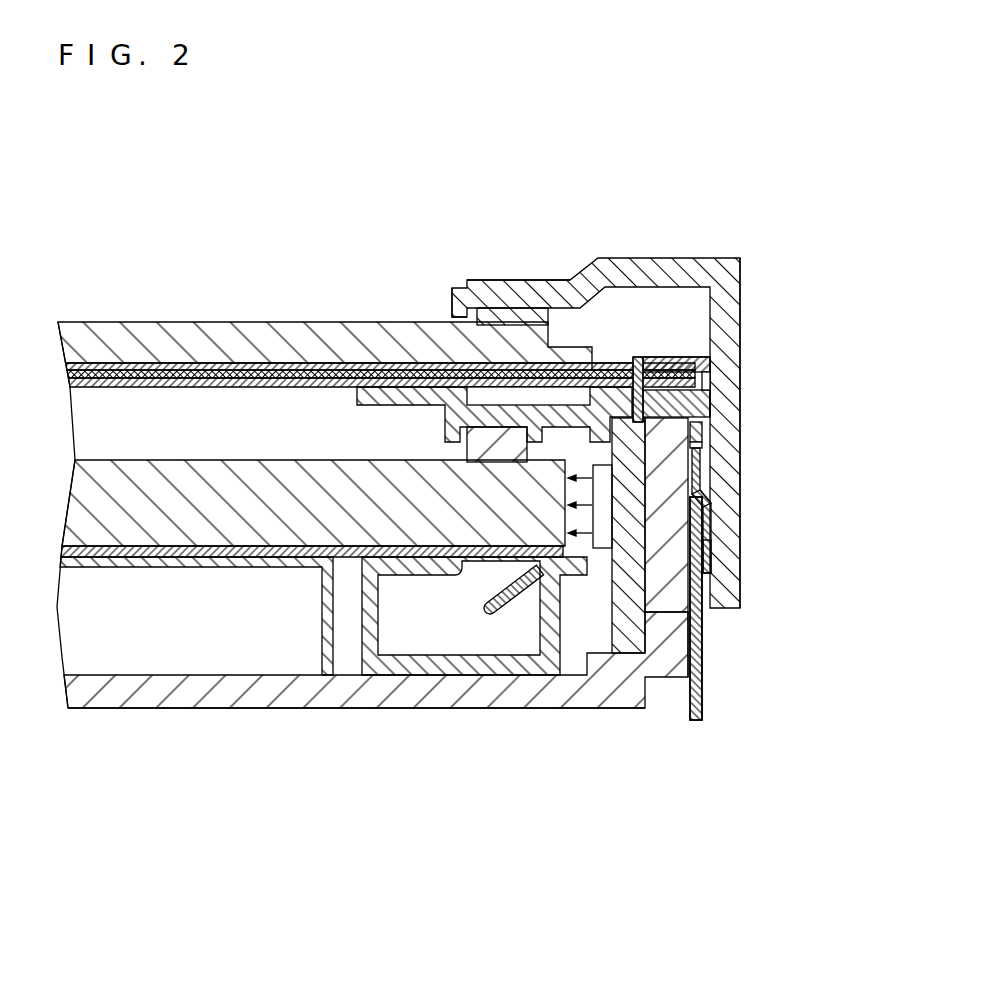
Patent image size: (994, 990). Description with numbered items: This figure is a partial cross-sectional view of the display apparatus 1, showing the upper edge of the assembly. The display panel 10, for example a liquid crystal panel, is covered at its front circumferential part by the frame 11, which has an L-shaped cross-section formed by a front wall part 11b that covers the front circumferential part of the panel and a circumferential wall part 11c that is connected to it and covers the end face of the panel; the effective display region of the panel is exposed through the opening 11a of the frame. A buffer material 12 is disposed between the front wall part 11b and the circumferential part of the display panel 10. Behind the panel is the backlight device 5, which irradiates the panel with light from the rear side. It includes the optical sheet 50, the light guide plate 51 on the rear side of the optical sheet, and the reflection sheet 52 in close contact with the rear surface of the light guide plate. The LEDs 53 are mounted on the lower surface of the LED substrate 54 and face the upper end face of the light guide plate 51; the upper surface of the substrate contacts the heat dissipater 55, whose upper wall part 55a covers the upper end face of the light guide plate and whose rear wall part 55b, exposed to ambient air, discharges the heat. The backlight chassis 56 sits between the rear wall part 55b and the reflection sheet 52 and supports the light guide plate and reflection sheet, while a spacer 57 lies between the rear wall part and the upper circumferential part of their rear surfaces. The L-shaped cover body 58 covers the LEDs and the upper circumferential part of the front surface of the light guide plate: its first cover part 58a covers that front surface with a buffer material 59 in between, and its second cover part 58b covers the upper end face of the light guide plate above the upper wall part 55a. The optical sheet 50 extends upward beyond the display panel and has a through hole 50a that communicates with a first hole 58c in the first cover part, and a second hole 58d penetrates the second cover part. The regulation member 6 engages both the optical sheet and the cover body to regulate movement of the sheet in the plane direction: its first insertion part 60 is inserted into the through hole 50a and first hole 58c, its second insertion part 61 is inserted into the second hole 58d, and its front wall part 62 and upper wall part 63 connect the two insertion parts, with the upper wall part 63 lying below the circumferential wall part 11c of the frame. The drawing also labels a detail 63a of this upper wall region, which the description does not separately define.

The display apparatus 1 is at (777, 172).
The backlight device 5 is at (719, 793).
The regulation member 6 is at (678, 347).
The display panel 10 is at (288, 330).
The frame 11 is at (752, 276).
The opening 11a is at (455, 300).
The front wall part 11b is at (540, 283).
The circumferential wall part 11c is at (740, 332).
The buffer material 12 is at (495, 312).
The optical sheet 50 is at (228, 365).
The through hole 50a is at (628, 362).
The light guide plate 51 is at (172, 470).
The reflection sheet 52 is at (122, 548).
The LEDs 53 is at (603, 547).
The LED substrate 54 is at (627, 650).
The heat dissipater 55 is at (499, 717).
The upper wall part 55a is at (670, 660).
The rear wall part 55b is at (428, 700).
The backlight chassis 56 is at (323, 647).
The spacer 57 is at (375, 668).
The cover body 58 is at (708, 714).
The first cover part 58a is at (368, 392).
The second cover part 58b is at (703, 637).
The first hole 58c is at (636, 357).
The second hole 58d is at (712, 503).
The buffer material 59 is at (463, 452).
The first insertion part 60 is at (692, 440).
The second insertion part 61 is at (702, 473).
The front wall part 62 is at (653, 355).
The upper wall part 63 is at (712, 383).
The lower cushion member 63a is at (712, 415).